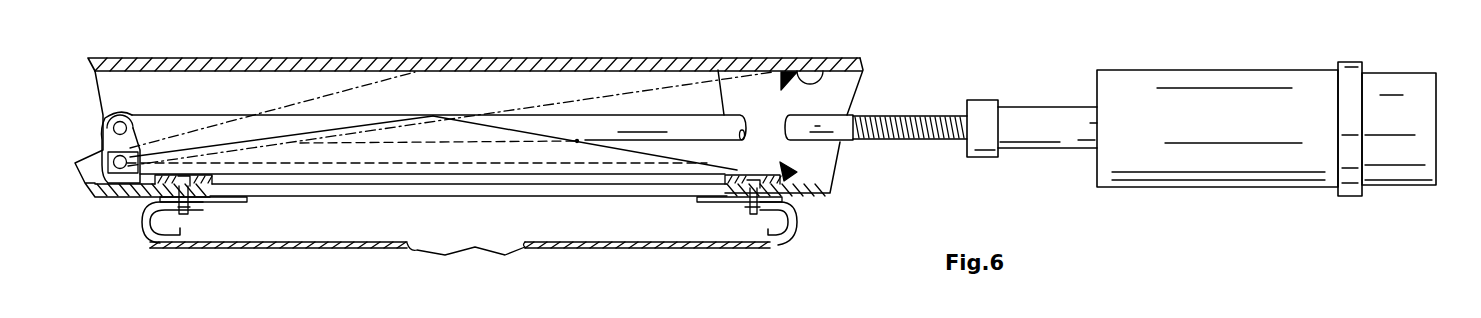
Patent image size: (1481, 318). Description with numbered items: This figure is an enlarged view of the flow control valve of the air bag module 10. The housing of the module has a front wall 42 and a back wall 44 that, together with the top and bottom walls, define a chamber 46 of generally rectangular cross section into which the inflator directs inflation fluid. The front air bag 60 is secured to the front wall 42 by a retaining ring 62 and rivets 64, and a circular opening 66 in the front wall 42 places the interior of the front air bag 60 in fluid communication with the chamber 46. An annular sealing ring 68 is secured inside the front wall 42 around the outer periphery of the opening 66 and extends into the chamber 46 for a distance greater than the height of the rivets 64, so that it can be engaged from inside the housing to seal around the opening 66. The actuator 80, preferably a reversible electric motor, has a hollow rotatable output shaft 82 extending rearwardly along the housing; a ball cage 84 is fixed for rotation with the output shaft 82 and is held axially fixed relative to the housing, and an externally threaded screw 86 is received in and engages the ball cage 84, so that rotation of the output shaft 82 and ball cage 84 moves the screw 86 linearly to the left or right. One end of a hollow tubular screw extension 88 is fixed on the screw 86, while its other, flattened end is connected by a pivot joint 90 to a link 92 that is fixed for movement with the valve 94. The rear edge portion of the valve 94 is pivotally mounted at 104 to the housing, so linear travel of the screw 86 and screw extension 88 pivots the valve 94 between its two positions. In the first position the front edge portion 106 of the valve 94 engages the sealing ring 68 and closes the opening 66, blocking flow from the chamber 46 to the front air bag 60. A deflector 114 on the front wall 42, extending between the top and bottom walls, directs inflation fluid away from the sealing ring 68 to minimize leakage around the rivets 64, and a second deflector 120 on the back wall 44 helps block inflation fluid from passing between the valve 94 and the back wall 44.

The air bag module 10 is at (1246, 225).
The front wall 42 is at (92, 190).
The back wall 44 is at (593, 58).
The chamber 46 is at (278, 88).
The front air bag 60 is at (333, 246).
The retaining ring 62 is at (735, 212).
The rivets 64 is at (760, 233).
The circular opening 66 is at (422, 190).
The annular sealing ring 68 is at (737, 167).
The actuator 80 is at (1236, 70).
The output shaft 82 is at (1073, 107).
The ball cage 84 is at (984, 112).
The screw 86 is at (936, 118).
The screw extension 88 is at (723, 115).
The pivot joint 90 is at (122, 127).
The link 92 is at (112, 153).
The valve 94 is at (560, 174).
The pivot mounting 104 is at (118, 168).
The front edge portion 106 is at (715, 167).
The deflector 114 is at (797, 168).
The deflector 120 is at (832, 60).